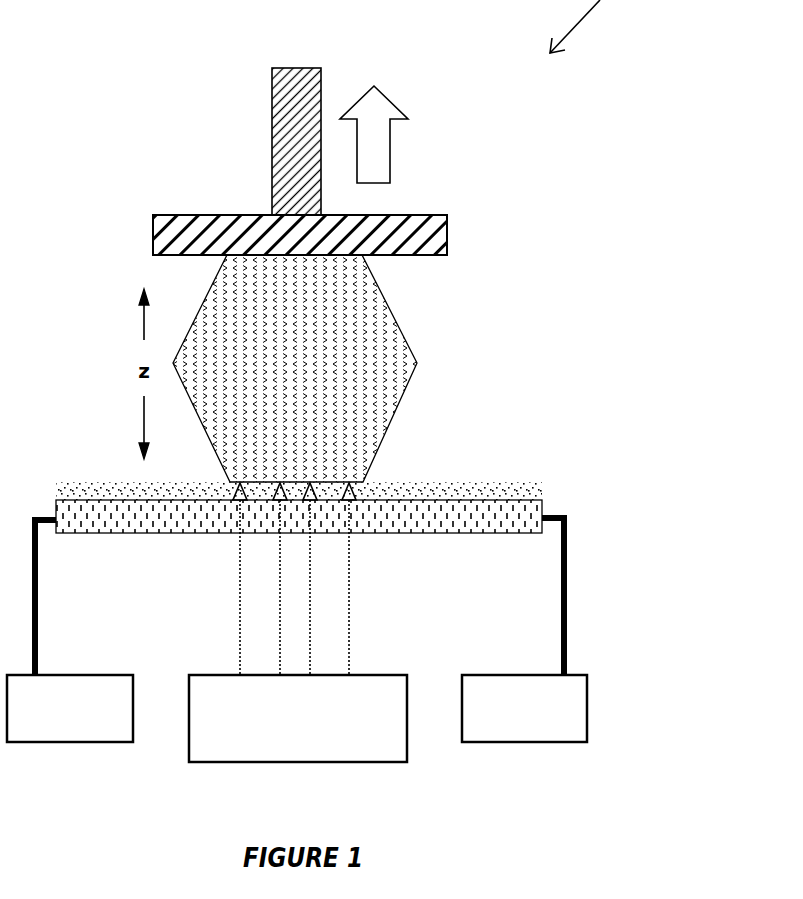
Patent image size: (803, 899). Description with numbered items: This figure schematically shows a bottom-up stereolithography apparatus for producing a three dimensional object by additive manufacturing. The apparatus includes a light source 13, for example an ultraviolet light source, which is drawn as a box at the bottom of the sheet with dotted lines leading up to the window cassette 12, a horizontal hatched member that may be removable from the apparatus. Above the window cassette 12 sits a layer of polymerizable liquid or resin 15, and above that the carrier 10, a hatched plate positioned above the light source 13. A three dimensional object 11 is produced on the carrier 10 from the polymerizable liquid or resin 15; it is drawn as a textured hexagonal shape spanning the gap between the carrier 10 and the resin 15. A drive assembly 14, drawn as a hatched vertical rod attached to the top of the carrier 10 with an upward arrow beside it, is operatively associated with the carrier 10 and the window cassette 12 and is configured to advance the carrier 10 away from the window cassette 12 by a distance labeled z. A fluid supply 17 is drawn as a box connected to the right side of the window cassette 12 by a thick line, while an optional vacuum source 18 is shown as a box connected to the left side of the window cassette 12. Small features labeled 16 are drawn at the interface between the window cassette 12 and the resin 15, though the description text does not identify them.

The carrier 10 is at (153, 238).
The three dimensional object 11 is at (295, 368).
The window cassette 12 is at (102, 512).
The light source 13 is at (298, 718).
The drive assembly 14 is at (280, 124).
The polymerizable liquid or resin 15 is at (417, 482).
The emitter tips / nozzles 16 is at (320, 483).
The fluid supply 17 is at (524, 708).
The vacuum source 18 is at (70, 708).